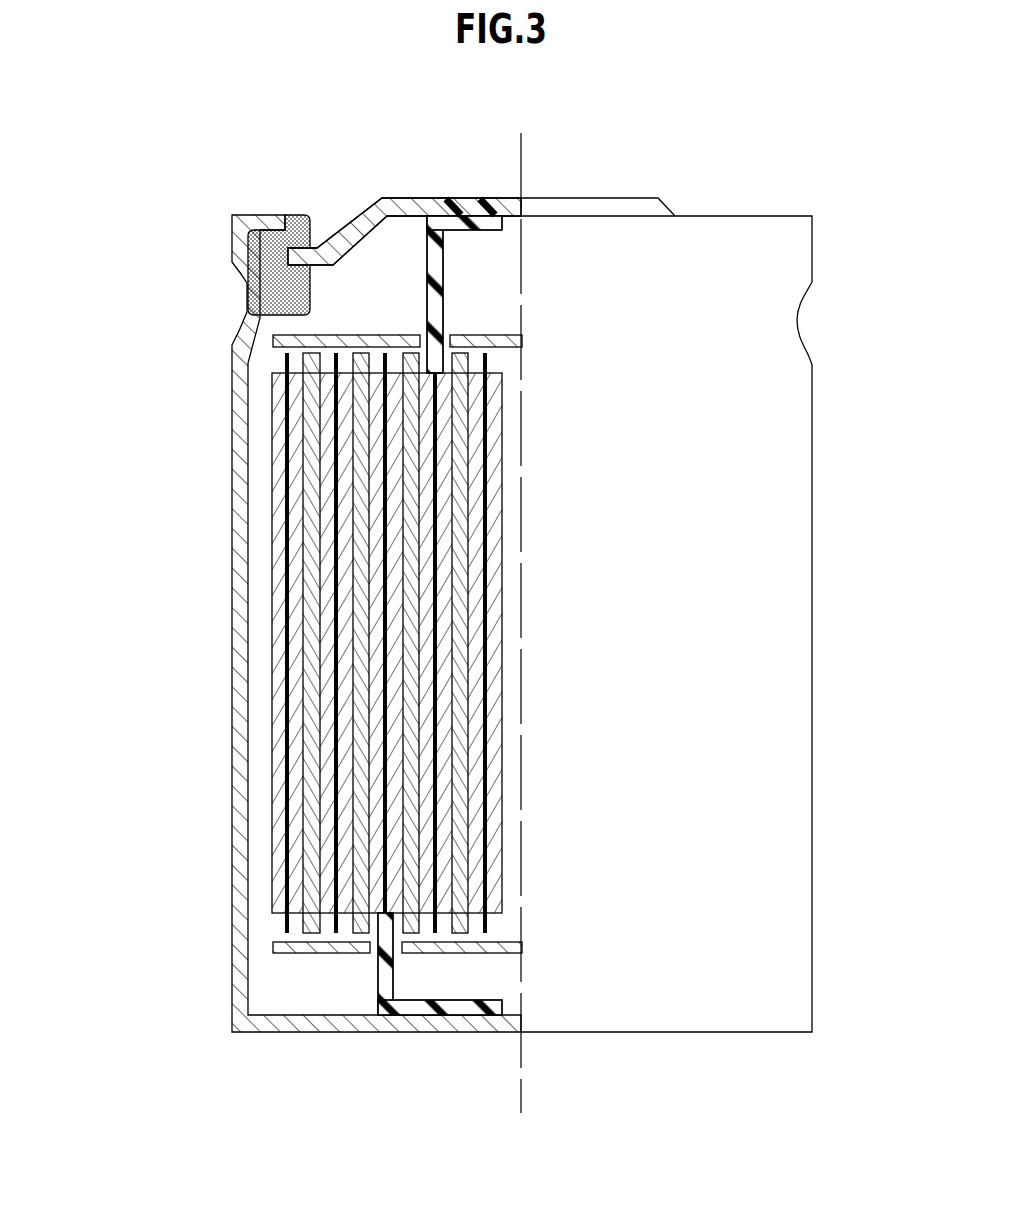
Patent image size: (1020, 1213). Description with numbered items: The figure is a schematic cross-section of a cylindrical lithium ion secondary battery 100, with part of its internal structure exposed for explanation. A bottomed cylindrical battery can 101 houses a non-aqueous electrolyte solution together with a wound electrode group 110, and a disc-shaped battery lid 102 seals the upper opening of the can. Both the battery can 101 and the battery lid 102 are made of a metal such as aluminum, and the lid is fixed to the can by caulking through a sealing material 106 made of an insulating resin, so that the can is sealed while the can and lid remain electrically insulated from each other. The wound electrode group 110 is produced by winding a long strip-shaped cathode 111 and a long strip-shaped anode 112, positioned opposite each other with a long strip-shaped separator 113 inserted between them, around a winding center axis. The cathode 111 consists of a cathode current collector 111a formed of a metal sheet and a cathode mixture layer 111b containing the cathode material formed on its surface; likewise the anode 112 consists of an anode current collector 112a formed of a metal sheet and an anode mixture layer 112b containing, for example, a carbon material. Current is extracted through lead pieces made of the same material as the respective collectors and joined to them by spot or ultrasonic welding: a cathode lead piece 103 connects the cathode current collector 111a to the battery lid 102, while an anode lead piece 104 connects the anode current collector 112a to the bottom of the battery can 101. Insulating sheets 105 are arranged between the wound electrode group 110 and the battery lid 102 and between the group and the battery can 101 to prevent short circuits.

The secondary battery 100 is at (726, 151).
The battery can 101 is at (252, 213).
The battery lid 102 is at (343, 227).
The cathode lead piece 103 is at (428, 280).
The anode lead piece 104 is at (377, 966).
The insulating sheet 105 is at (280, 340).
The sealing material 106 is at (297, 213).
The wound electrode group 110 is at (281, 643).
The cathode 111 is at (131, 563).
The cathode current collector 111a is at (283, 575).
The cathode mixture layer 111b is at (290, 622).
The anode 112 is at (130, 383).
The anode current collector 112a is at (283, 393).
The anode mixture layer 112b is at (283, 425).
The separator 113 is at (290, 497).